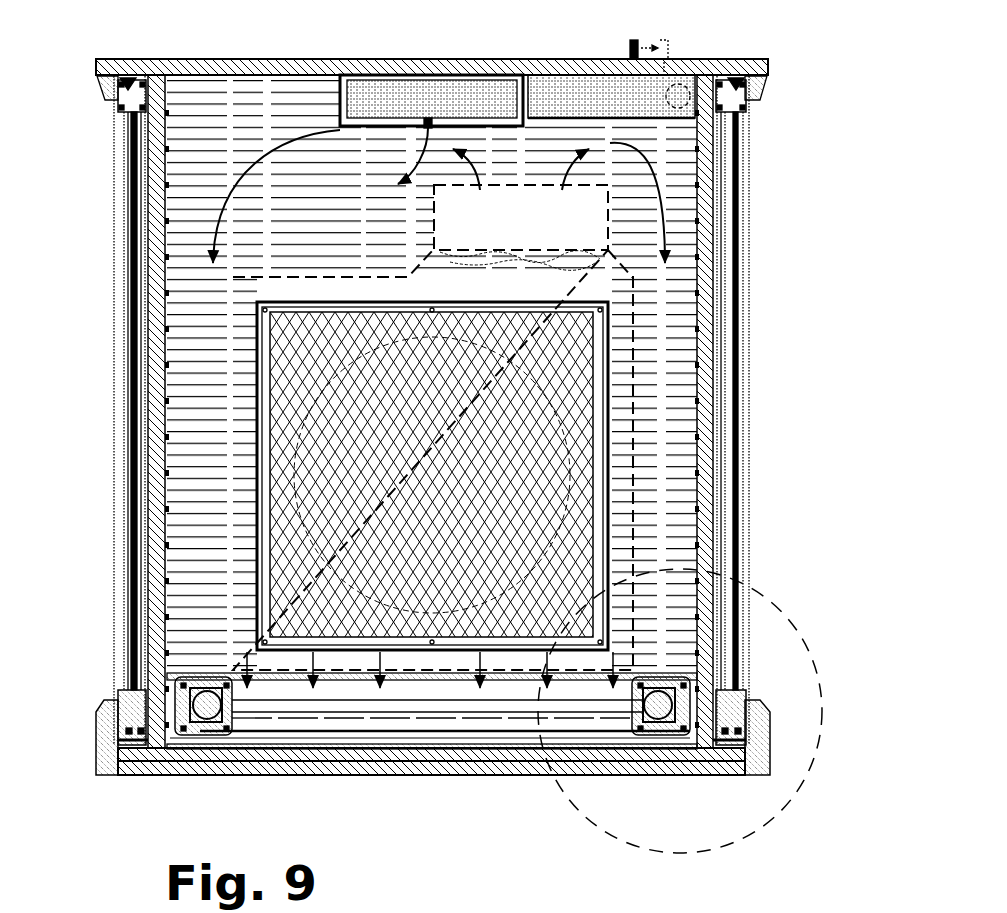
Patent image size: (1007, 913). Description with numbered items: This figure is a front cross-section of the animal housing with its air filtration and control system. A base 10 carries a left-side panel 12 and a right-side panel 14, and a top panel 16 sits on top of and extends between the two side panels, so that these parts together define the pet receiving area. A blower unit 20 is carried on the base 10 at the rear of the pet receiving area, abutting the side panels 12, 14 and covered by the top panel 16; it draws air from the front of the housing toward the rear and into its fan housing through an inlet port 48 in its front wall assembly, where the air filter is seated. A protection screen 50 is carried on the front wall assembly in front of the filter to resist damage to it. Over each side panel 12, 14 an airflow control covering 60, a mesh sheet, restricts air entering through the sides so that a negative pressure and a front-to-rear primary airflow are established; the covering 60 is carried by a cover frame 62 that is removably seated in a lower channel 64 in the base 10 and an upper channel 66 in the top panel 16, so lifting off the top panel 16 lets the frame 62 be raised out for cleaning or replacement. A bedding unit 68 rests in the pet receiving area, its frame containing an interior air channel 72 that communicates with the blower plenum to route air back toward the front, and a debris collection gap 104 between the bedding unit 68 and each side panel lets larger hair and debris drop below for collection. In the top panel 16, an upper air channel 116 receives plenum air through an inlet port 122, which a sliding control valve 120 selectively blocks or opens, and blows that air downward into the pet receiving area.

The base 10 is at (112, 757).
The left-side panel 12 is at (165, 318).
The right-side panel 14 is at (703, 208).
The top panel 16 is at (203, 65).
The blower unit 20 is at (652, 366).
The inlet port 48 is at (556, 480).
The protection screen 50 is at (568, 476).
The airflow control covering 60 is at (750, 262).
The cover frame 62 is at (730, 566).
The lower channel 64 is at (116, 732).
The upper channel 66 is at (145, 75).
The bedding unit 68 is at (290, 715).
The interior air channel 72 is at (207, 707).
The debris collection gap 104 is at (700, 708).
The upper air channel 116 is at (435, 100).
The control valve 120 is at (632, 40).
The inlet port 122 is at (680, 96).